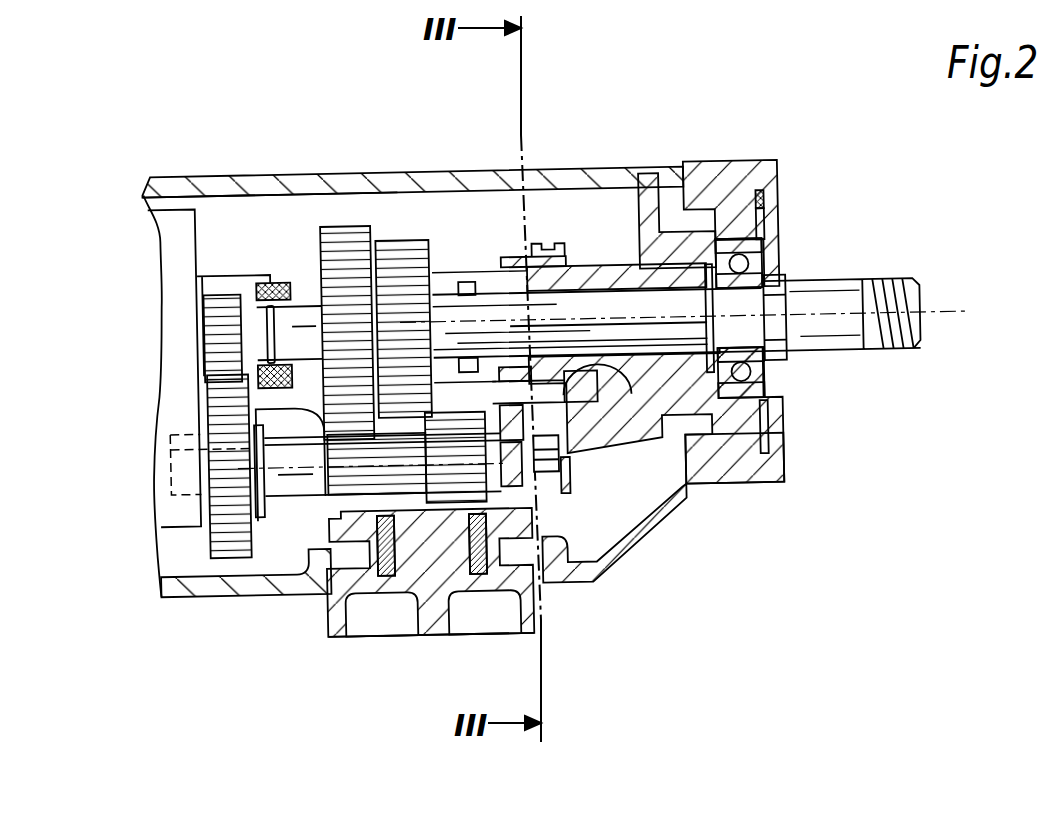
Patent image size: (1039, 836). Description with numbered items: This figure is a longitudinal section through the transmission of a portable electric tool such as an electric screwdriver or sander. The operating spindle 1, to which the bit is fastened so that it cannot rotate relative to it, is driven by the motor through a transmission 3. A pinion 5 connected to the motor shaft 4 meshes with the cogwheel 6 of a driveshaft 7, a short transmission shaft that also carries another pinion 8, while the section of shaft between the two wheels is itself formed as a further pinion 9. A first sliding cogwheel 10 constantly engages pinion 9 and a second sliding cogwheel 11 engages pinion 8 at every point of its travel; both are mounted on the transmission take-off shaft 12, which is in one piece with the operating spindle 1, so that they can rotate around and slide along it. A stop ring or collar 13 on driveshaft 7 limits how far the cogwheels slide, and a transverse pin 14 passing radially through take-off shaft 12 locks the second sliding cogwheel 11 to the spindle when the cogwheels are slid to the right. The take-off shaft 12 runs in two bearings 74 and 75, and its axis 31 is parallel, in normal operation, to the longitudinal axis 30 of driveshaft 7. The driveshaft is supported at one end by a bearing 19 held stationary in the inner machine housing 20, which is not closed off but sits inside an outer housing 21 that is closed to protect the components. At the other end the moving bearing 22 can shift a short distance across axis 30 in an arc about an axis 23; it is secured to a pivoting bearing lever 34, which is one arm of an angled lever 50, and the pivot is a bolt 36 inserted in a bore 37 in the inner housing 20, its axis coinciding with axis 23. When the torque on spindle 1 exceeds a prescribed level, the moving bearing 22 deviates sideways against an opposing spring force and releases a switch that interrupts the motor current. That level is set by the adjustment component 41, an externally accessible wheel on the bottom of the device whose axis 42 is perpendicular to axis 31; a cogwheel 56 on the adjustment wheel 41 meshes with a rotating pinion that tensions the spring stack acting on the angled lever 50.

The operating spindle 1 is at (842, 283).
The transmission 3 is at (417, 219).
The motor shaft 4 is at (207, 313).
The pinion 5 is at (227, 313).
The cogwheel 6 is at (240, 557).
The driveshaft 7 is at (300, 450).
The pinion 8 is at (474, 560).
The pinion 9 is at (440, 502).
The first sliding cogwheel 10 is at (350, 247).
The second sliding cogwheel 11 is at (393, 260).
The transmission take-off shaft 12 is at (303, 317).
The stop ring or collar 13 is at (253, 417).
The transverse pin 14 is at (466, 286).
The bearing 19 is at (178, 515).
The machine housing 20 is at (177, 241).
The housing 21 is at (260, 183).
The moving bearing 22 is at (557, 537).
The axis 23 is at (667, 390).
The longitudinal axis 30 is at (292, 485).
The axis 31 is at (600, 323).
The bearing lever 34 is at (568, 455).
The bolt 36 is at (590, 440).
The bore 37 is at (623, 405).
The adjustment component 41 is at (466, 595).
The axis 42 is at (386, 575).
The angled lever 50 is at (487, 410).
The cogwheel 56 is at (530, 537).
The bearing 74 is at (270, 292).
The bearing 75 is at (733, 262).